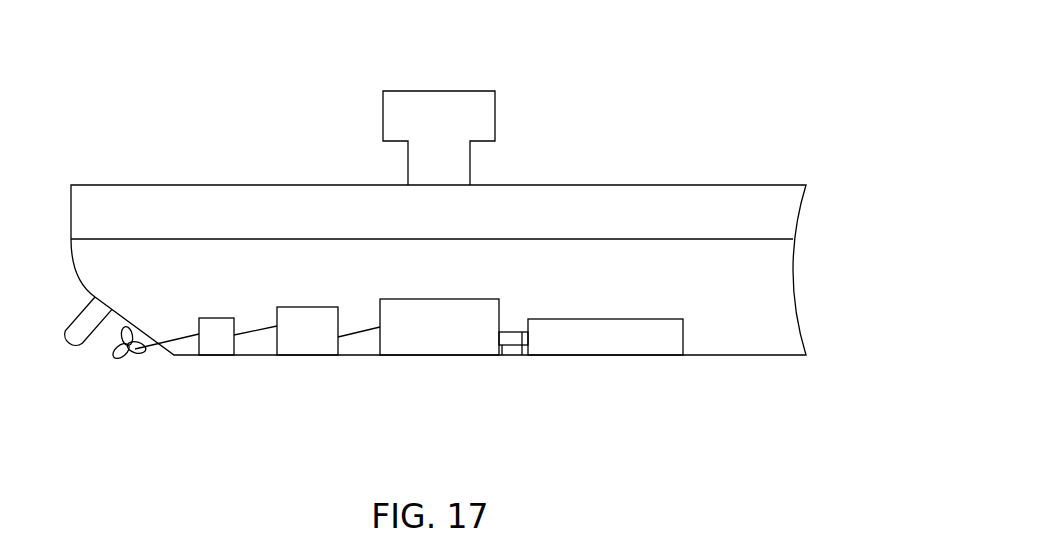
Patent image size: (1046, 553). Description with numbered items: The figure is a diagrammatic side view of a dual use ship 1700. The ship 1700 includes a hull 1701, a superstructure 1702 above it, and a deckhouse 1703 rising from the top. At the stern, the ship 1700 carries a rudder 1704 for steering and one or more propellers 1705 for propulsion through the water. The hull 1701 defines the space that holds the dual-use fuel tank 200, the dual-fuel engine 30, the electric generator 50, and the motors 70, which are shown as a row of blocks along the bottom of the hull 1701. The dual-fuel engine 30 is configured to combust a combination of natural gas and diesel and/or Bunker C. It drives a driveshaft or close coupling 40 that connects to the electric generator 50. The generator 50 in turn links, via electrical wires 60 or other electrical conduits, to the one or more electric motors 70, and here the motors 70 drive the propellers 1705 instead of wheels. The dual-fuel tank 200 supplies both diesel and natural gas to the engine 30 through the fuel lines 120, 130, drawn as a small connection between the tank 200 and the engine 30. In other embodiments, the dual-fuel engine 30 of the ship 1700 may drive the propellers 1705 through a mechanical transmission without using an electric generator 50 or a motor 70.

The dual use ship 1700 is at (692, 65).
The hull 1701 is at (804, 302).
The superstructure 1702 is at (804, 226).
The deckhouse 1703 is at (433, 82).
The rudder 1704 is at (73, 355).
The propellers 1705 is at (173, 354).
The electric motors 70 is at (204, 350).
The electrical wires 60 is at (253, 338).
The electric generator 50 is at (295, 346).
The driveshaft or close coupling 40 is at (352, 338).
The dual-fuel engine 30 is at (426, 342).
The dual-use fuel tank 200 is at (585, 349).
The fuel line 130 is at (504, 356).
The fuel line 120 is at (523, 356).